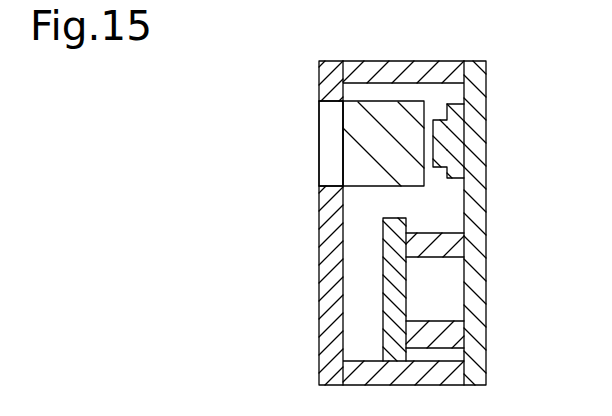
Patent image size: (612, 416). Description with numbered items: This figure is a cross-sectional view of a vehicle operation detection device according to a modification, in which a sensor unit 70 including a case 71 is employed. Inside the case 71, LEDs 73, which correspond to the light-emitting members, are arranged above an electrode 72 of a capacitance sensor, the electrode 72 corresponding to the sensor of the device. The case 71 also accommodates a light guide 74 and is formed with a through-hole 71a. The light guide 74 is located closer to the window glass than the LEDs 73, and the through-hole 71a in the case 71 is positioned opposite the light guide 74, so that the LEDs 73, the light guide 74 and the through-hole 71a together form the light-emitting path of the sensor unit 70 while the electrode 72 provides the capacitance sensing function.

The sensor unit 70 is at (516, 79).
The case 71 is at (346, 62).
The through-hole 71a is at (328, 183).
The electrode 72 is at (384, 281).
The LEDs 73 is at (447, 172).
The light guide 74 is at (356, 128).